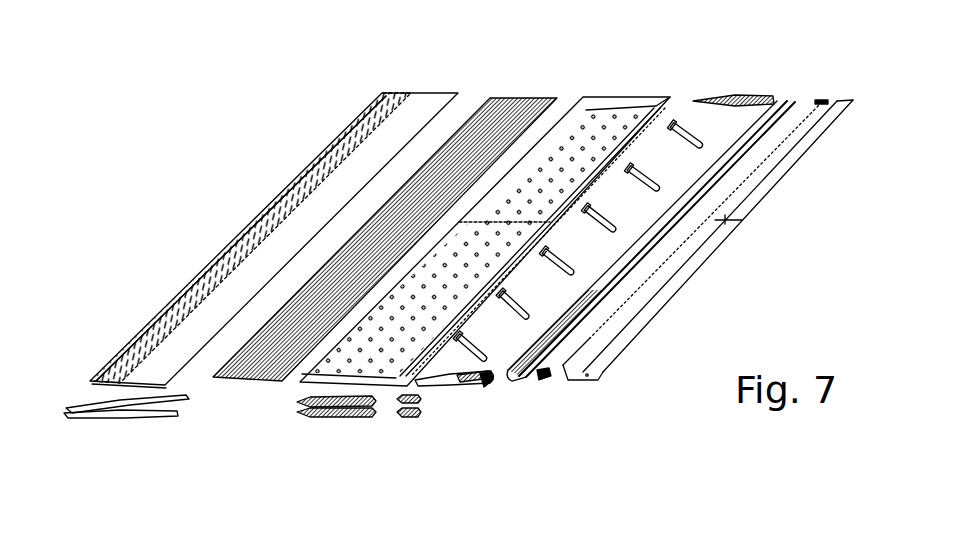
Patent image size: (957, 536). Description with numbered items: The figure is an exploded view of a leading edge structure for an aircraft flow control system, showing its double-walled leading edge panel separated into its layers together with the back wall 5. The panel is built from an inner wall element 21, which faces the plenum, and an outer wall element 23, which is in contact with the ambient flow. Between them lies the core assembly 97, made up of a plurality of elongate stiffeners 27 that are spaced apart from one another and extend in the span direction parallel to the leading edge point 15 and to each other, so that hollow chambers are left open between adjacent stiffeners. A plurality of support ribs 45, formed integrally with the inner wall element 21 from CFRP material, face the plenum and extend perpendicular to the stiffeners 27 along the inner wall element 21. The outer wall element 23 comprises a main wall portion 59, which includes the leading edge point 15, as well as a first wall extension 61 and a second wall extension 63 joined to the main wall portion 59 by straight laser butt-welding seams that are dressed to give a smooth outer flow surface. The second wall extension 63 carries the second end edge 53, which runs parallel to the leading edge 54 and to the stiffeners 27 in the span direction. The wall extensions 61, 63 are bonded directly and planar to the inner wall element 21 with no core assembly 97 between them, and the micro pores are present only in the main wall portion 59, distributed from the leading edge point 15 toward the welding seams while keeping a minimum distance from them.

The leading edge 54 is at (270, 240).
The leading edge point 15 is at (223, 247).
The outer wall element 23 is at (350, 140).
The main wall portion 59 is at (331, 221).
The second end edge 53 is at (180, 372).
The elongate stiffeners 27 is at (396, 216).
The core assembly 97 is at (512, 98).
The inner wall element 21 is at (617, 107).
The support ribs 45 is at (640, 167).
The back wall 5 is at (523, 377).
The first wall extension 61 is at (570, 363).
The second wall extension 63 is at (597, 372).